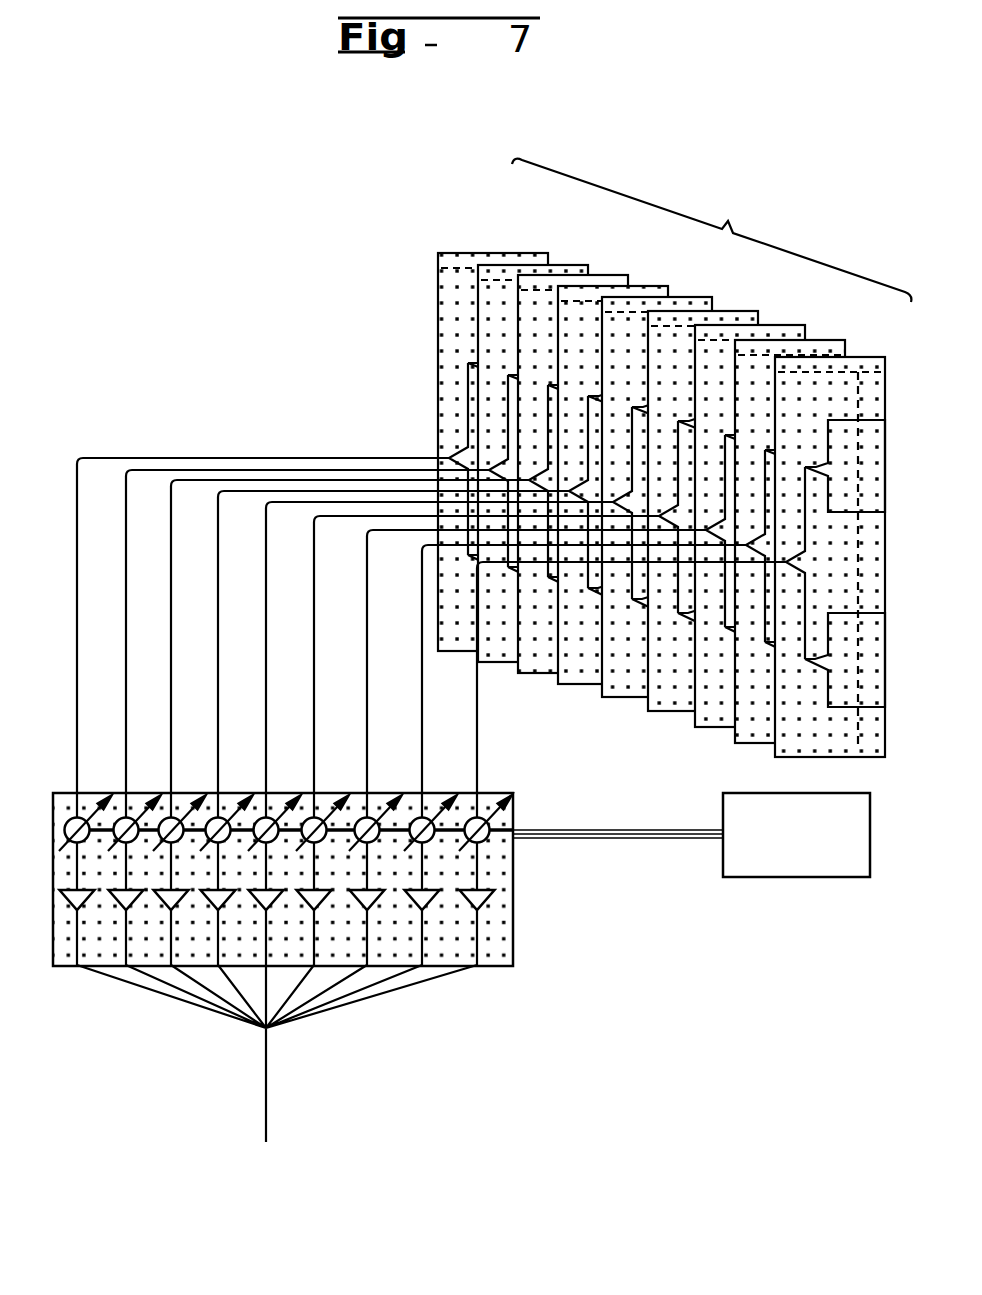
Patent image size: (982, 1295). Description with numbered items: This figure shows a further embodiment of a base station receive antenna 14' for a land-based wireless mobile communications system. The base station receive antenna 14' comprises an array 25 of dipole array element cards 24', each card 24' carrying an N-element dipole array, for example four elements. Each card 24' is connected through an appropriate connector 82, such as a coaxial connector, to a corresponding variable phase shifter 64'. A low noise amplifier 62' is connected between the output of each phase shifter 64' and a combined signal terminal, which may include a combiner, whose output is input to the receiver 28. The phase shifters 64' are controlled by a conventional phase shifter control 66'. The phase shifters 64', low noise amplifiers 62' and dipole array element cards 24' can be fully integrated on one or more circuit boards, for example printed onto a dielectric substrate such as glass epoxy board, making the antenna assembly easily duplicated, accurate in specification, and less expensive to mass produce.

The base station receive antenna 14' is at (674, 420).
The array 25 is at (711, 230).
The dipole array element card 24' is at (661, 474).
The connector 82 is at (193, 470).
The phase shifter 64' is at (271, 782).
The low noise amplifier 62' is at (271, 958).
The phase shifter control 66' is at (705, 861).
The receiver 28 is at (277, 1075).